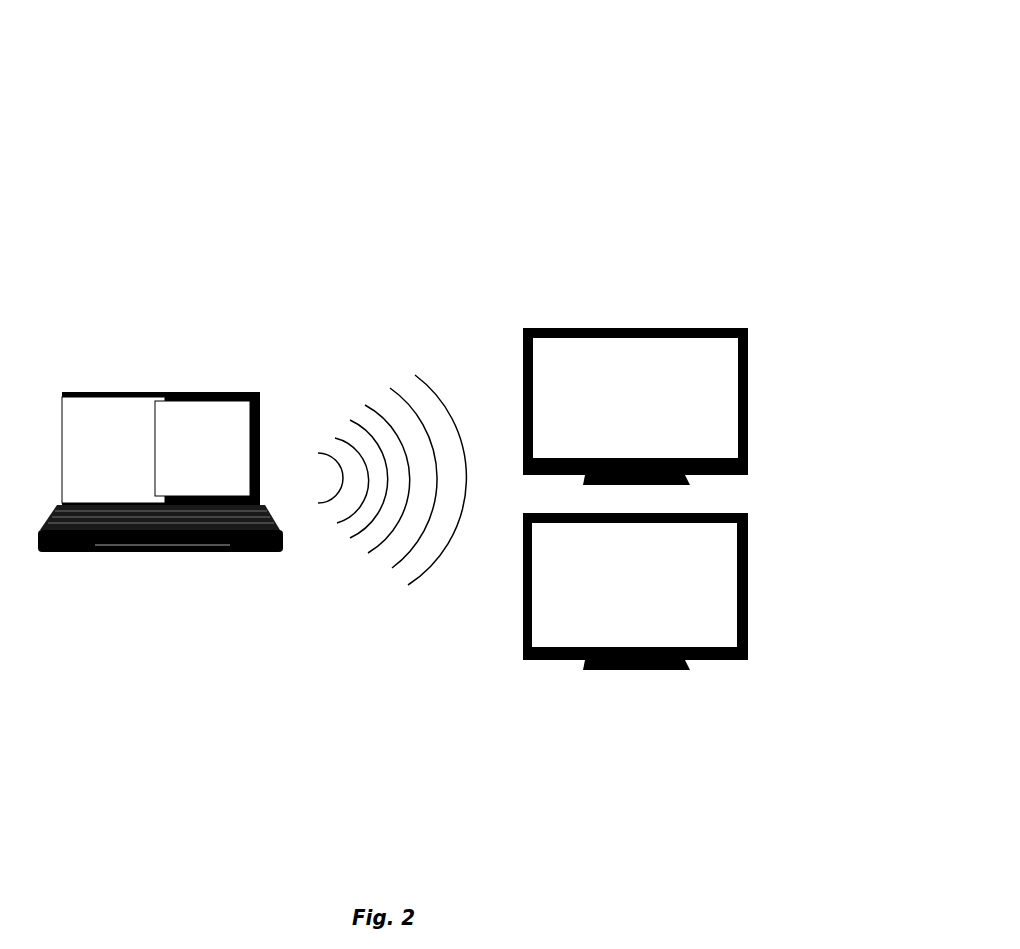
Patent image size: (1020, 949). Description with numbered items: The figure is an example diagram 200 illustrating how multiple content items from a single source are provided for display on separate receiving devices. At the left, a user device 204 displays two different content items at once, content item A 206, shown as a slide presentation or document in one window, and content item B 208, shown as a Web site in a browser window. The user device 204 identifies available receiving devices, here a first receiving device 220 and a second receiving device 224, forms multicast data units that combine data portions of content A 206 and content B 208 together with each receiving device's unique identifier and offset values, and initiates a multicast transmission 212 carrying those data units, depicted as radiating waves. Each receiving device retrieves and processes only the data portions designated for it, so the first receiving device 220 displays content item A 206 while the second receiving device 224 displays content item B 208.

The example diagram 200 is at (578, 90).
The user device 204 is at (158, 392).
The content item A 206 is at (117, 503).
The content item B 208 is at (205, 496).
The multicast transmission 212 is at (414, 373).
The first receiving device 220 is at (598, 328).
The second receiving device 224 is at (585, 663).